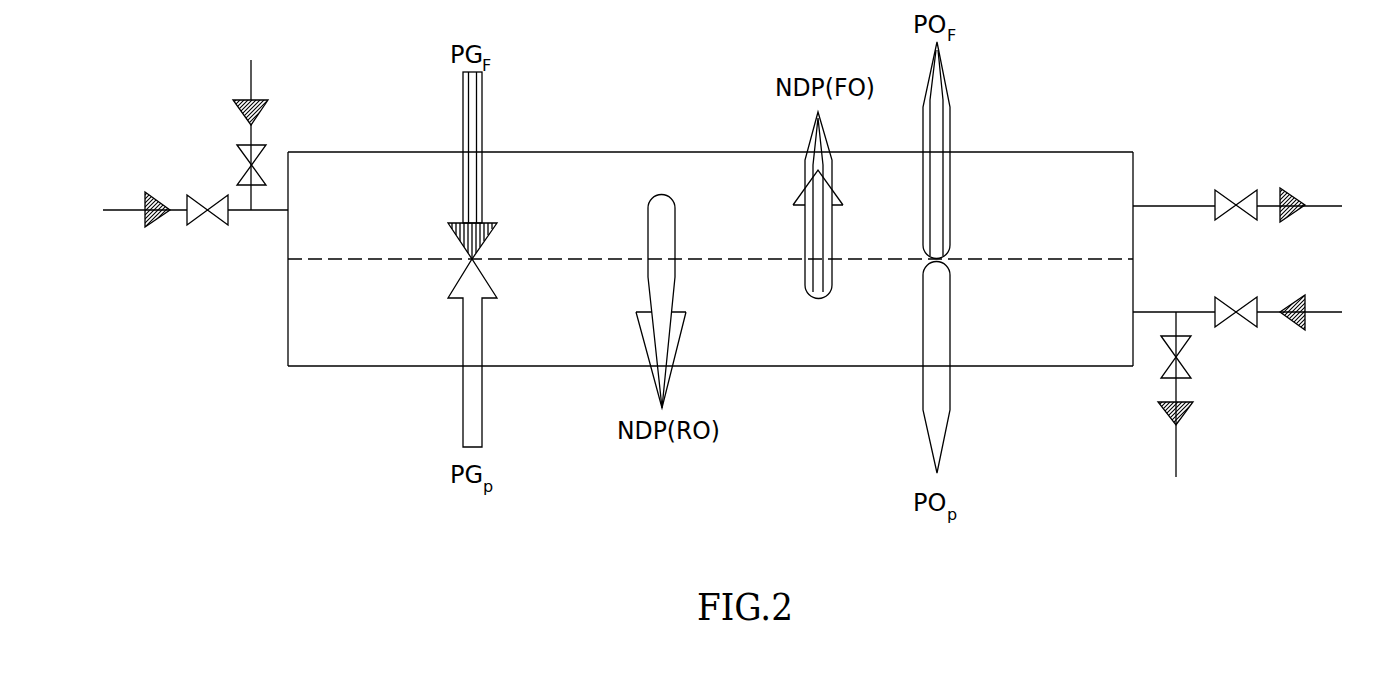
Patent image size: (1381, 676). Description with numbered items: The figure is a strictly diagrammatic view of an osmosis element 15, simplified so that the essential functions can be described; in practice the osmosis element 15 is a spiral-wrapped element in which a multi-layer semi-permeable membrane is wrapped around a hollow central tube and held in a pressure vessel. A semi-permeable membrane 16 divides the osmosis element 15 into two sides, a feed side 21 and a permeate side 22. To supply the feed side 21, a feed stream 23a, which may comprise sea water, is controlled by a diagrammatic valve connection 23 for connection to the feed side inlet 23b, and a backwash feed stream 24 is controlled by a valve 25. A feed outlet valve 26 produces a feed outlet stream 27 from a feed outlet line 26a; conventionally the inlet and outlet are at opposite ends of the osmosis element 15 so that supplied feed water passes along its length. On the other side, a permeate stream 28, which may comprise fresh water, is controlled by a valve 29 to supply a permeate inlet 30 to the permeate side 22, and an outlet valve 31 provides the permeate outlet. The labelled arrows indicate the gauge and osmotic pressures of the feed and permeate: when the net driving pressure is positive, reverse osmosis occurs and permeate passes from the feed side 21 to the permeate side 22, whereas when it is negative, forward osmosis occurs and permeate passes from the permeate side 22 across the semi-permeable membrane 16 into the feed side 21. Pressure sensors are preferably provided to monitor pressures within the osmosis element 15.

The osmosis element 15 is at (1016, 102).
The semi-permeable membrane 16 is at (380, 258).
The feed side 21 is at (605, 176).
The permeate side 22 is at (831, 350).
The valve connection 23 is at (218, 216).
The feed stream 23a is at (122, 208).
The feed side inlet 23b is at (272, 212).
The backwash feed stream 24 is at (251, 73).
The valve 25 is at (247, 137).
The feed outlet valve 26 is at (1240, 192).
The feed outlet line 26a is at (1168, 205).
The feed outlet stream 27 is at (1318, 205).
The permeate stream 28 is at (1318, 312).
The valve 29 is at (1240, 298).
The permeate inlet 30 is at (1160, 312).
The outlet valve 31 is at (1168, 357).